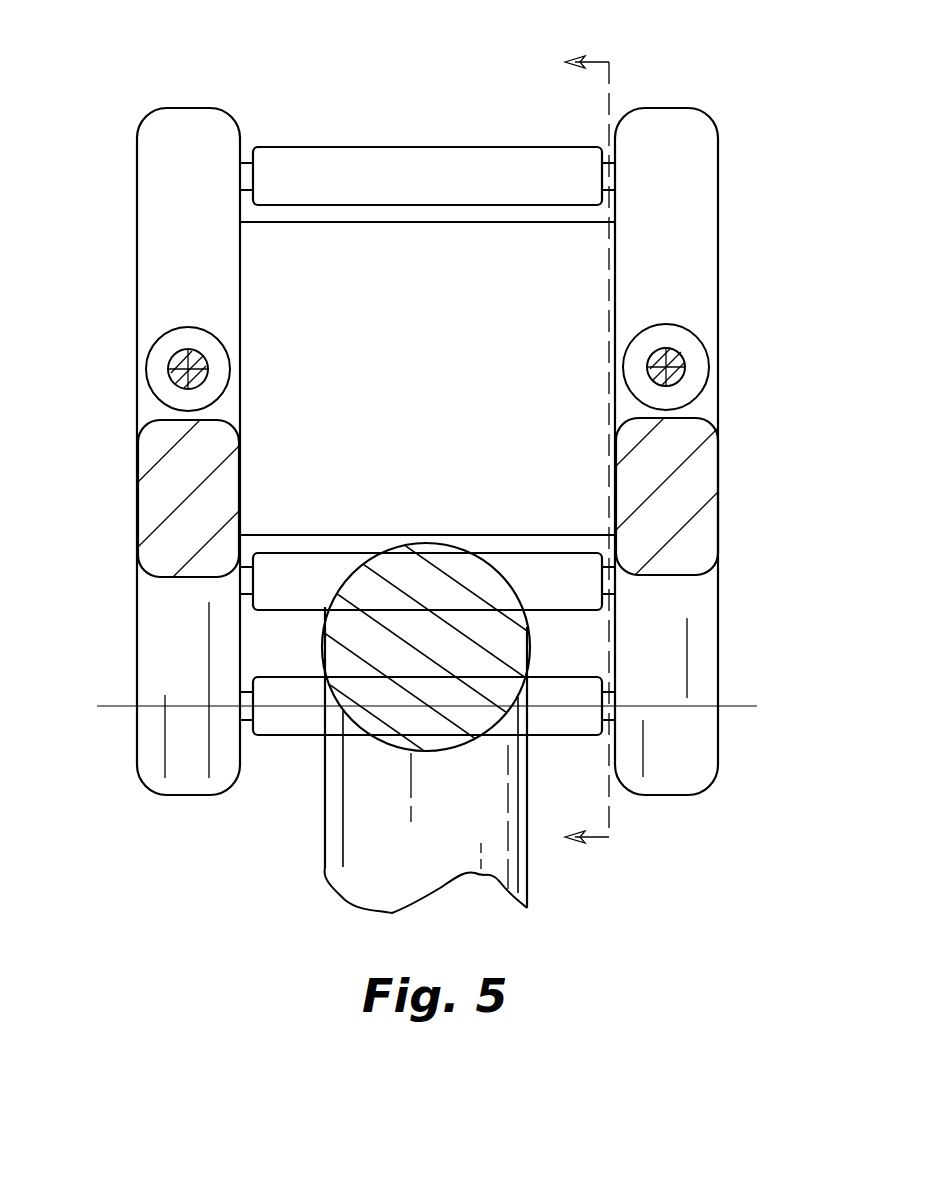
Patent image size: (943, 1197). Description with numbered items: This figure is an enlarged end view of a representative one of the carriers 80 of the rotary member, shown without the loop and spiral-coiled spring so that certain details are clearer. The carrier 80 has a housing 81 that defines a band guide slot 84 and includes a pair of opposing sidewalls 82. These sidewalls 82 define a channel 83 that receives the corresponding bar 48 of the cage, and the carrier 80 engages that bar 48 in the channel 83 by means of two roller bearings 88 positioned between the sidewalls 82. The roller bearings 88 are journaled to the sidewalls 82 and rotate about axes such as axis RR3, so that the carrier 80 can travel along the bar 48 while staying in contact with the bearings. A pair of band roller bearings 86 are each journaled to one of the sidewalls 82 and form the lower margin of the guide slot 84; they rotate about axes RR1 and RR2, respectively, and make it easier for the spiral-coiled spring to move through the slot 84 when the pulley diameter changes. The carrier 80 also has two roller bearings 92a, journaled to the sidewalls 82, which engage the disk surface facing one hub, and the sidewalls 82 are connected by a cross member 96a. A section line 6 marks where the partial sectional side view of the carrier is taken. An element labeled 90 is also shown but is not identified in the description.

The bar 48 is at (427, 852).
The carrier 80 is at (720, 158).
The housing 81 is at (192, 108).
The sidewalls 82 is at (136, 597).
The channel 83 is at (238, 665).
The band guide slot 84 is at (656, 160).
The band roller bearings 86 is at (148, 352).
The roller bearings 88 is at (277, 737).
The pivot pin 90 is at (228, 403).
The roller bearings 92a is at (502, 207).
The cross member 96a is at (447, 287).
The axis RR1 is at (178, 386).
The axis RR2 is at (676, 352).
The axis RR3 is at (735, 706).
The section line 6 is at (602, 451).